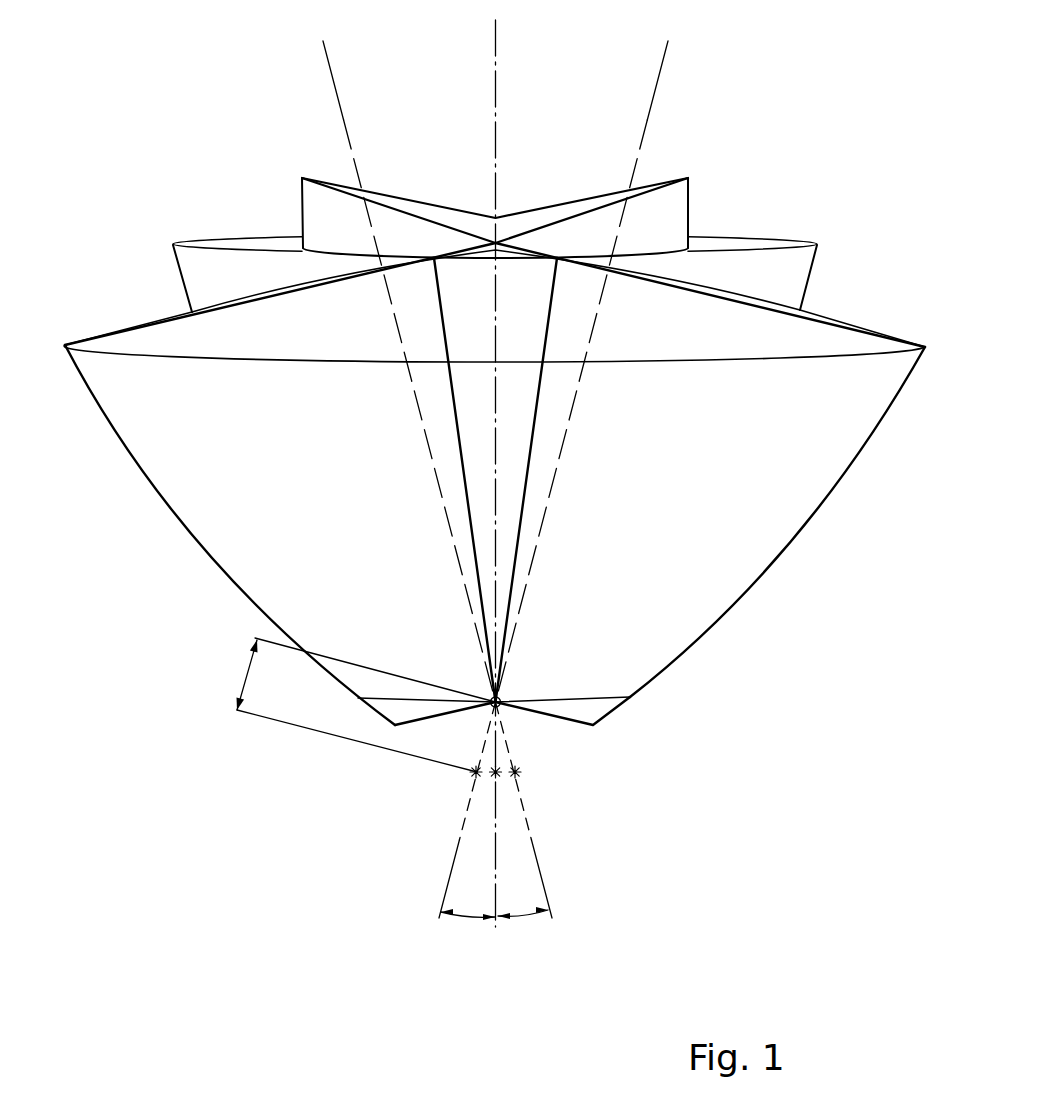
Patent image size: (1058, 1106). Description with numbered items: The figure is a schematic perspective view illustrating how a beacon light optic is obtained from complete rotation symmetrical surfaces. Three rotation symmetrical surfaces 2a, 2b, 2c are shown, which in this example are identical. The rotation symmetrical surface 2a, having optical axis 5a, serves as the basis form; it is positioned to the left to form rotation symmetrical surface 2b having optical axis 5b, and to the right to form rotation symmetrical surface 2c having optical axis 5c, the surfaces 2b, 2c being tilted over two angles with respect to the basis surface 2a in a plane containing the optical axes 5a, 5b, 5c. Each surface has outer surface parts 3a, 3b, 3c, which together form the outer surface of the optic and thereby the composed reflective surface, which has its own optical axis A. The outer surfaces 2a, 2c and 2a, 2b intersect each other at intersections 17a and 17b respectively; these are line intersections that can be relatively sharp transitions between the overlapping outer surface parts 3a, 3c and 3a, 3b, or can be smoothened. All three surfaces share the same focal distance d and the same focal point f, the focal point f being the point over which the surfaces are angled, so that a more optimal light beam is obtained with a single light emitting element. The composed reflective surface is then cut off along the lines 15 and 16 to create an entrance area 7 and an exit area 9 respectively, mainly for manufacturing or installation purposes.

The optical axis A is at (496, 37).
The rotation symmetrical surface 2a is at (788, 265).
The rotation symmetrical surface 2b is at (670, 205).
The rotation symmetrical surface 2c is at (852, 327).
The outer surface part 3a is at (495, 390).
The outer surface part 3b is at (198, 498).
The outer surface part 3c is at (792, 498).
The optical axis 5a is at (496, 92).
The optical axis 5b is at (337, 92).
The optical axis 5c is at (655, 92).
The entrance area 7 is at (567, 700).
The exit area 9 is at (893, 338).
The cutting line 15 is at (598, 700).
The cutting line 16 is at (877, 357).
The intersection 17a is at (538, 393).
The intersection 17b is at (452, 393).
The focal point f is at (500, 707).
The focal distance d is at (356, 705).